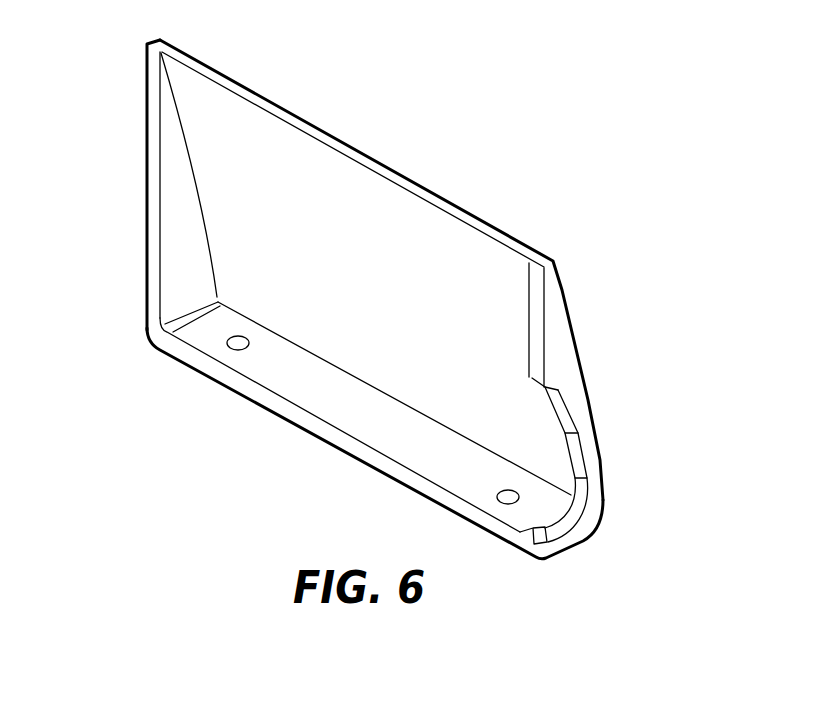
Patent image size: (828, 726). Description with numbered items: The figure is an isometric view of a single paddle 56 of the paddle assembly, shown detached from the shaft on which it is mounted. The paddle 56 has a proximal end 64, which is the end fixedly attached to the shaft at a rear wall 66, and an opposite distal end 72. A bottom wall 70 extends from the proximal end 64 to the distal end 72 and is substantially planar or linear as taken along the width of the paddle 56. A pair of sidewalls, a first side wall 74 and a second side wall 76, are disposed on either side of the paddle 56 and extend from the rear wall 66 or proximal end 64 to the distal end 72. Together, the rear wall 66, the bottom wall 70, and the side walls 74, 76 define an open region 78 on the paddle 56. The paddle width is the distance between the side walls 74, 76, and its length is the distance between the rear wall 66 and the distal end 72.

The paddle 56 is at (391, 292).
The proximal end 64 is at (298, 427).
The rear wall 66 is at (540, 503).
The bottom wall 70 is at (470, 270).
The distal end 72 is at (288, 110).
The first side wall 74 is at (173, 158).
The second side wall 76 is at (570, 378).
The open region 78 is at (357, 204).